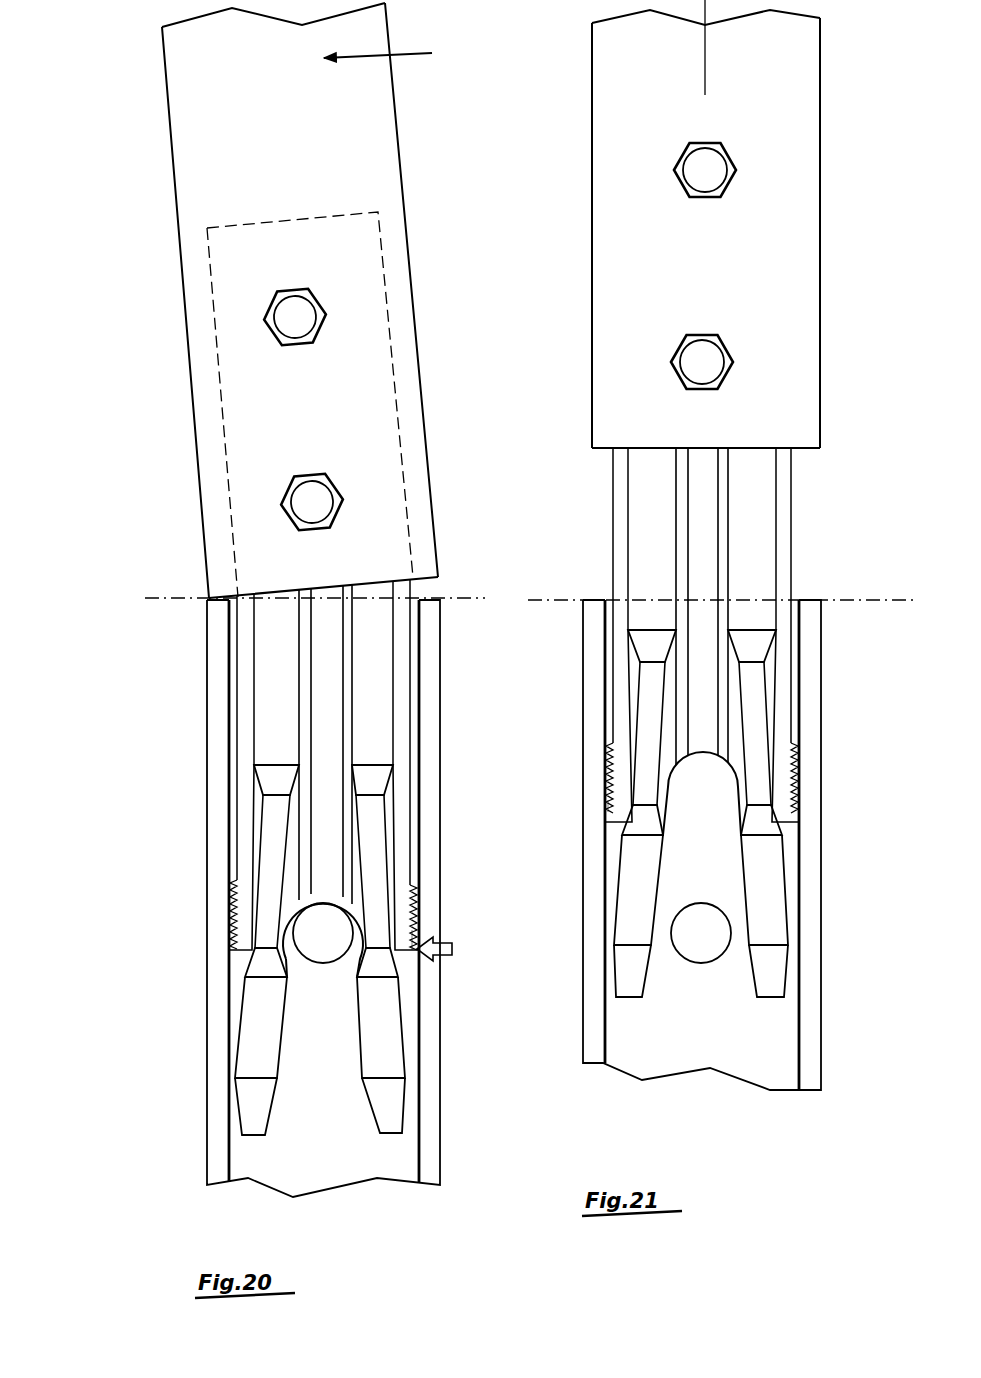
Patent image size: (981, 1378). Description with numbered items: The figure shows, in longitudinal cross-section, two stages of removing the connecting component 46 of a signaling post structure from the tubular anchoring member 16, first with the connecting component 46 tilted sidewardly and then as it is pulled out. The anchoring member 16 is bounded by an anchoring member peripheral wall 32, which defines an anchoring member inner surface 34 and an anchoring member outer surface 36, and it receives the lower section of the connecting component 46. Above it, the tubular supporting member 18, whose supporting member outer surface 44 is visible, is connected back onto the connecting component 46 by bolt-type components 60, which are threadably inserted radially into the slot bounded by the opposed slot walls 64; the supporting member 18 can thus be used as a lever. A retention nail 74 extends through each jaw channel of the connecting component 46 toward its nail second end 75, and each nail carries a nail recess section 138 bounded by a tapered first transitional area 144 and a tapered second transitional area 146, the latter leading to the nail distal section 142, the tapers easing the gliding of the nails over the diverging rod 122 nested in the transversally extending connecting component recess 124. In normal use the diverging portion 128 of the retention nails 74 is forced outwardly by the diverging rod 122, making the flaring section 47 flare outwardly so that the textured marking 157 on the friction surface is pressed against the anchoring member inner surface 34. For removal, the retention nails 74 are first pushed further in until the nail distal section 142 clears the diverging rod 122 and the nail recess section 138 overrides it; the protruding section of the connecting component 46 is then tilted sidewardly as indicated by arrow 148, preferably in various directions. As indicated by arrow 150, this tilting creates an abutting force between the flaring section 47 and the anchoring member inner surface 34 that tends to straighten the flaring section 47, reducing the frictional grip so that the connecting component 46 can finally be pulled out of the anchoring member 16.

In FIG. 20, the anchoring member 16 is at (462, 1134).
In FIG. 21, the anchoring member 16 is at (847, 1058).
In FIG. 20, the supporting member 18 is at (138, 46).
In FIG. 21, the supporting member 18 is at (582, 95).
In FIG. 20, the anchoring member peripheral wall 32 is at (215, 712).
In FIG. 21, the anchoring member peripheral wall 32 is at (598, 632).
In FIG. 20, the anchoring member inner surface 34 is at (240, 672).
In FIG. 21, the anchoring member inner surface 34 is at (795, 648).
In FIG. 21, the anchoring member outer surface 36 is at (820, 686).
In FIG. 20, the supporting member outer surface 44 is at (200, 105).
In FIG. 21, the supporting member outer surface 44 is at (795, 75).
In FIG. 21, the connecting component 46 is at (584, 515).
In FIG. 20, the flaring section 47 is at (415, 930).
In FIG. 21, the flaring section 47 is at (607, 808).
In FIG. 20, the bolt-type component 60 is at (282, 318).
In FIG. 21, the bolt-type component 60 is at (720, 165).
In FIG. 20, the slot walls 64 is at (338, 610).
In FIG. 21, the slot walls 64 is at (710, 545).
In FIG. 20, the retention nail 74 is at (272, 630).
In FIG. 21, the retention nail 74 is at (755, 487).
In FIG. 20, the nail second end 75 is at (238, 1113).
In FIG. 21, the nail second end 75 is at (605, 980).
In FIG. 20, the diverging rod 122 is at (308, 925).
In FIG. 21, the diverging rod 122 is at (712, 915).
In FIG. 20, the connecting component recess 124 is at (318, 896).
In FIG. 21, the connecting component recess 124 is at (735, 815).
In FIG. 20, the diverging portion 128 is at (225, 940).
In FIG. 21, the diverging portion 128 is at (840, 767).
In FIG. 20, the nail recess section 138 is at (256, 840).
In FIG. 21, the nail recess section 138 is at (630, 718).
In FIG. 20, the nail distal section 142 is at (238, 1023).
In FIG. 21, the nail distal section 142 is at (606, 886).
In FIG. 20, the first transitional area 144 is at (250, 784).
In FIG. 21, the first transitional area 144 is at (626, 651).
In FIG. 20, the second transitional area 146 is at (243, 965).
In FIG. 21, the second transitional area 146 is at (613, 830).
In FIG. 20, the arrow indicating sideward tilting 148 is at (377, 53).
In FIG. 20, the arrow indicating abutting force 150 is at (455, 945).
In FIG. 20, the textured marking 157 is at (230, 913).
In FIG. 21, the textured marking 157 is at (797, 763).